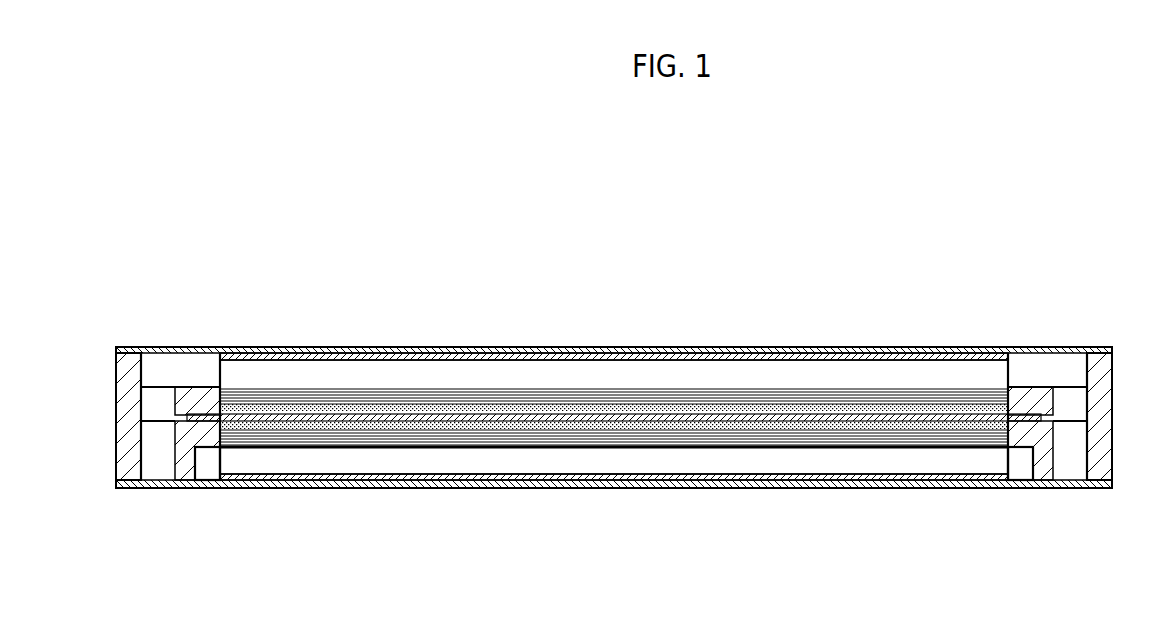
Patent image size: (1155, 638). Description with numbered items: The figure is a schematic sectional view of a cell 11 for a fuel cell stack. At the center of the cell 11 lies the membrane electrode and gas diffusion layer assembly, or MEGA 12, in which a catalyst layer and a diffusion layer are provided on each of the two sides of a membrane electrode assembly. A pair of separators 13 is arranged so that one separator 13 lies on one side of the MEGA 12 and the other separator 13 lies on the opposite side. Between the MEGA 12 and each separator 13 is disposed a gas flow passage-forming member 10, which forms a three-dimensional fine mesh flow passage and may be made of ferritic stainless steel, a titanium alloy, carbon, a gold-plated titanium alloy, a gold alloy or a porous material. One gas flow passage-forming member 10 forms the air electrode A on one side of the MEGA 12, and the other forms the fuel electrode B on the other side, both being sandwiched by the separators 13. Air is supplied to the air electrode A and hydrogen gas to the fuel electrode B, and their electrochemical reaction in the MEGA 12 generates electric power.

The gas flow passage-forming member 10 is at (229, 373).
The cell 11 is at (958, 280).
The membrane electrode and gas diffusion layer assembly (MEGA) 12 is at (985, 388).
The separator 13 is at (950, 347).
The air electrode A is at (691, 460).
The fuel electrode B is at (640, 370).